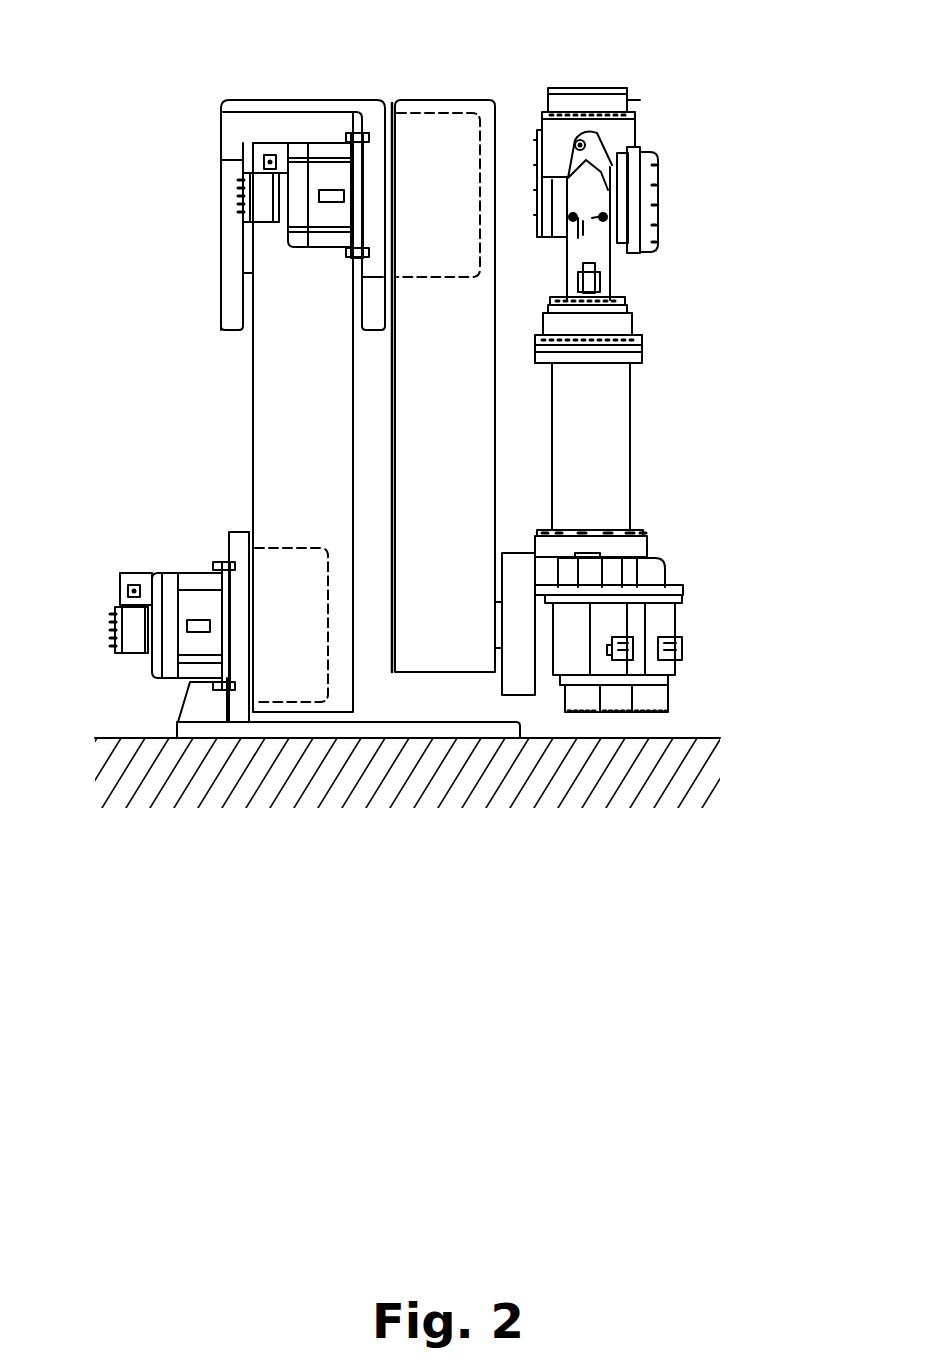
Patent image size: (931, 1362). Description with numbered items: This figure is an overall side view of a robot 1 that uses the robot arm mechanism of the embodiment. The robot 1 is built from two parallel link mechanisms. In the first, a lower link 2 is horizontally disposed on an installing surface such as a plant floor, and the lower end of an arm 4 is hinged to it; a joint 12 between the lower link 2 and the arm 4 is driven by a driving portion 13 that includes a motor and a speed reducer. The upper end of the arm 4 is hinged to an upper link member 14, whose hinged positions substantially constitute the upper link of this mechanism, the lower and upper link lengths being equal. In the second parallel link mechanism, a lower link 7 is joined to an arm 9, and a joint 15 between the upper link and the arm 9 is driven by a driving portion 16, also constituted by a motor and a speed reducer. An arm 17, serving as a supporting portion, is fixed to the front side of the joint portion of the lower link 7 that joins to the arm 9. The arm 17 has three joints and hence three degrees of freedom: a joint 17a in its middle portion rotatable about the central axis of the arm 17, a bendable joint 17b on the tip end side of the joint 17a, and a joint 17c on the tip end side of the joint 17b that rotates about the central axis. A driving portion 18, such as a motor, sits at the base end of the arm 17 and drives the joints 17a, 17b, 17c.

The robot 1 is at (712, 104).
The lower link 2 is at (243, 530).
The arm 4 is at (253, 428).
The lower link 7 is at (522, 695).
The arm 9 is at (495, 485).
The joint 12 is at (357, 687).
The driving portion 13 is at (190, 572).
The upper link member 14 is at (277, 100).
The joint 15 is at (460, 84).
The driving portion 16 is at (290, 237).
The arm 17 is at (630, 407).
The joint 17a is at (640, 333).
The joint 17b is at (658, 212).
The joint 17c is at (628, 100).
The driving portion 18 is at (675, 620).